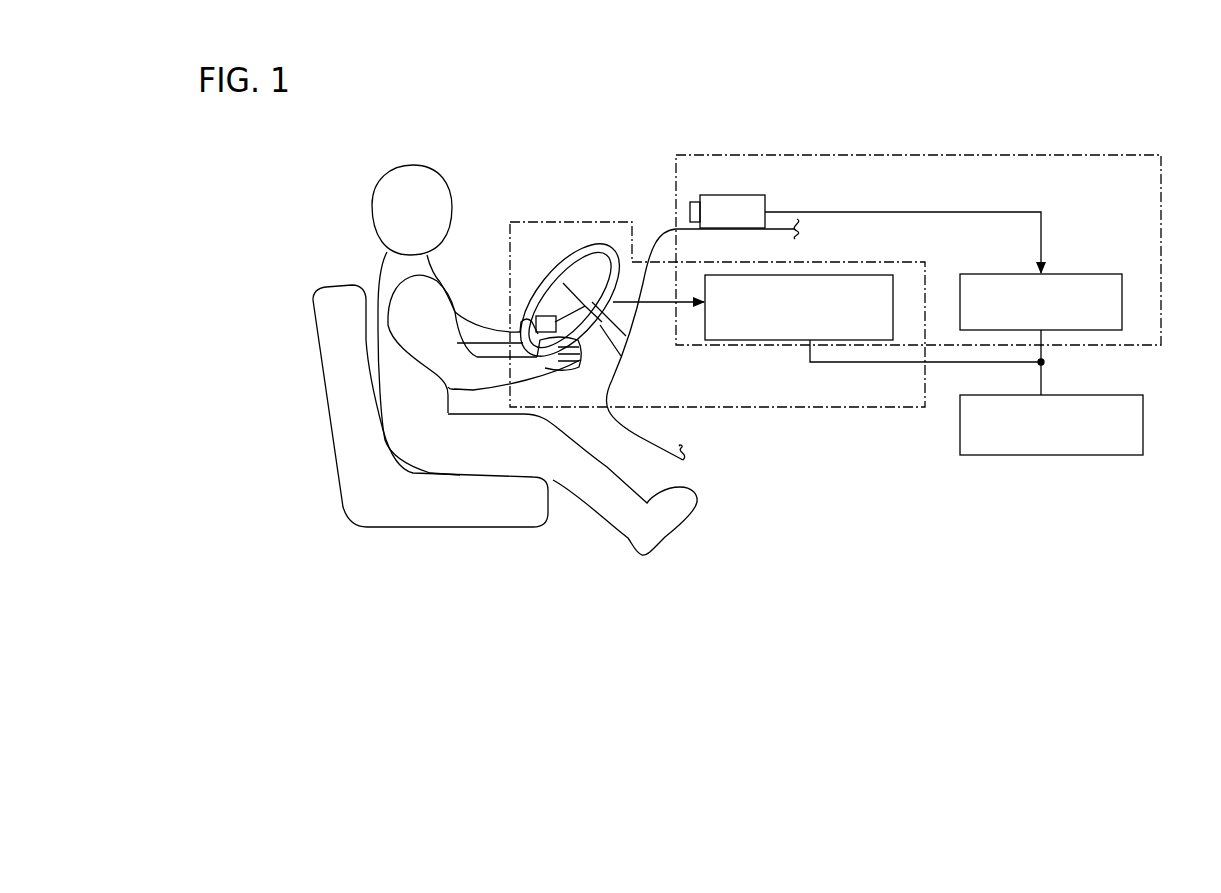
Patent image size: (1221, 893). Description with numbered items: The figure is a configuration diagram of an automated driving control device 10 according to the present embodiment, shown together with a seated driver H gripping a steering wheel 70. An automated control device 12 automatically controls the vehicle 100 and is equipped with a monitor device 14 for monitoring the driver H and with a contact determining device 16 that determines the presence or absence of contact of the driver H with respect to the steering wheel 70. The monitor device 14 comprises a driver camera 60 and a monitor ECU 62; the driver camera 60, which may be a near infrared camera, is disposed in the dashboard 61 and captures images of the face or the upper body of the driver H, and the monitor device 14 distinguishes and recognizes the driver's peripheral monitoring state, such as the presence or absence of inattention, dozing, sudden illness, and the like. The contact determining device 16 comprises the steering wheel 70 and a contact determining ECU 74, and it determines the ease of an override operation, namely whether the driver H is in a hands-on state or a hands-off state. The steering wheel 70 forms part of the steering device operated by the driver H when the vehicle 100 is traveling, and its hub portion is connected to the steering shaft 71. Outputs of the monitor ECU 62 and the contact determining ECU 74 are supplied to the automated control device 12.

The vehicle 100 is at (738, 94).
The automated driving control device 10 is at (870, 148).
The monitor device 14 is at (950, 155).
The driver camera 60 is at (748, 195).
The dashboard 61 is at (653, 226).
The monitor ECU 62 is at (1073, 274).
The contact determining device 16 is at (758, 408).
The contact determining ECU 74 is at (768, 340).
The automated control device 12 is at (1143, 423).
The steering wheel 70 is at (583, 262).
The steering shaft 71 is at (610, 333).
The driver H is at (378, 185).